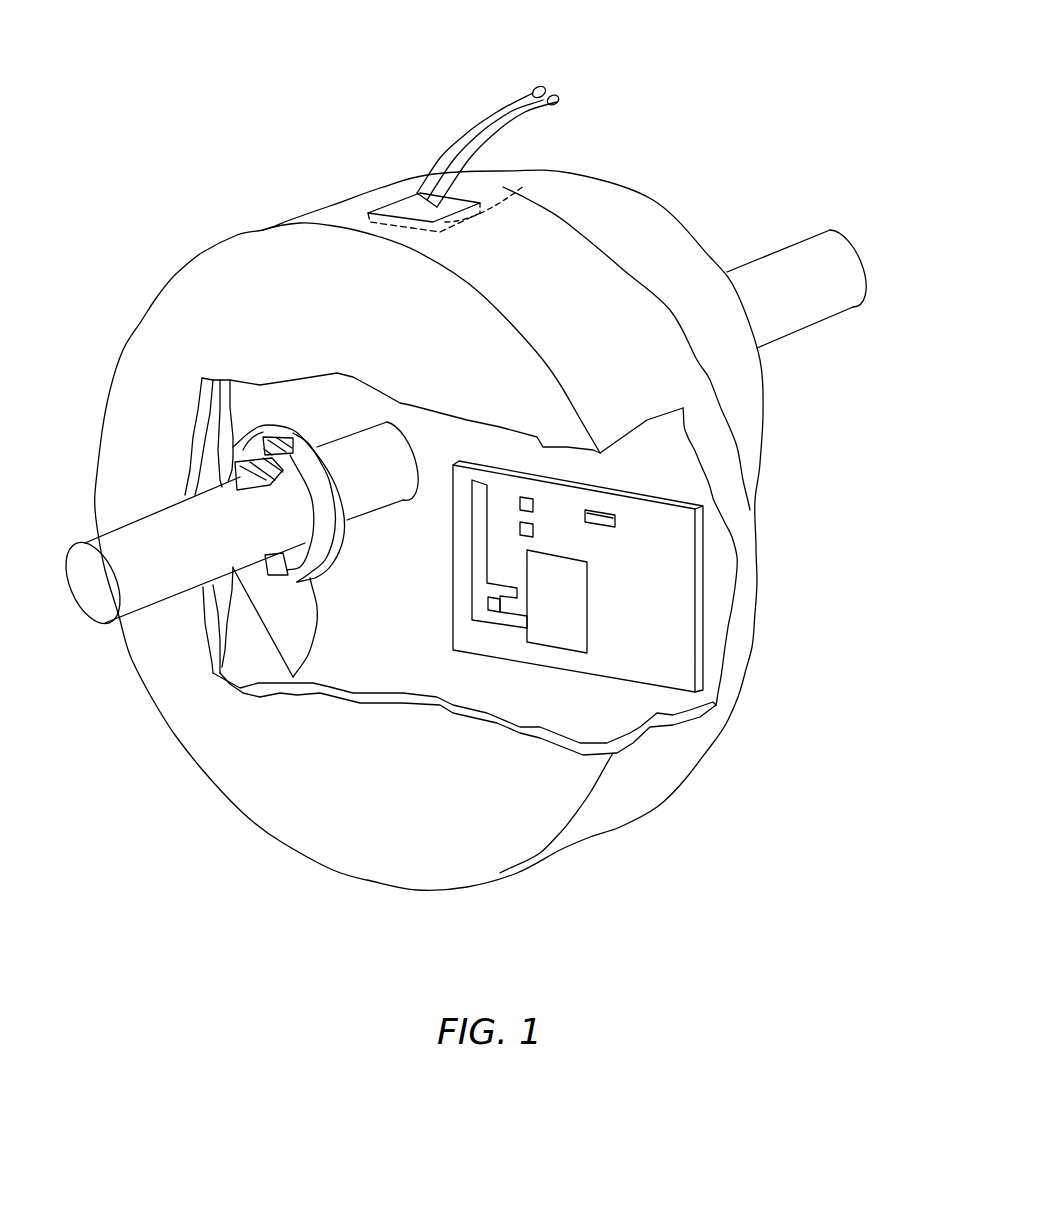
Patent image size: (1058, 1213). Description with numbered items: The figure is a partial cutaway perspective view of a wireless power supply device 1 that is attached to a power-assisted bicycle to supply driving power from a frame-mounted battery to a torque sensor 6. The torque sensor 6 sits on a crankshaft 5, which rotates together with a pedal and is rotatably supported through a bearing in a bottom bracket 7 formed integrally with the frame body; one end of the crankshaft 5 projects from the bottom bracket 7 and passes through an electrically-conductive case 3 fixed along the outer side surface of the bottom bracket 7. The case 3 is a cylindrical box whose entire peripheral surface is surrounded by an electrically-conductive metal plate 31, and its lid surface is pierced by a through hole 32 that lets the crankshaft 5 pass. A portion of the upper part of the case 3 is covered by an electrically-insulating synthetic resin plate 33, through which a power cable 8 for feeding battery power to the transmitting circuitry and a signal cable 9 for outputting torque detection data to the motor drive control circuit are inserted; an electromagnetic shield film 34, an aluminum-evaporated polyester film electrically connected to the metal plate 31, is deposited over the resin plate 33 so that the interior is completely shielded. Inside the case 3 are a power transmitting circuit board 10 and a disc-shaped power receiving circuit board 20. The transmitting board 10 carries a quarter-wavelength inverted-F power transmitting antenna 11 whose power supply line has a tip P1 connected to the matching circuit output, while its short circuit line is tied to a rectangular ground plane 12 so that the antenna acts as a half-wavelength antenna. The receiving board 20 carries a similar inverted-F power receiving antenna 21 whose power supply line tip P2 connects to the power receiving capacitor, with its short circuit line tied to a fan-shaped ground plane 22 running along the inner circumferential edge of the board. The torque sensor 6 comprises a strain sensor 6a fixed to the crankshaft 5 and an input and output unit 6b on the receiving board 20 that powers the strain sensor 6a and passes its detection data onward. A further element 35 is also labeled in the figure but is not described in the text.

The wireless power supply device 1 is at (880, 573).
The electrically-conductive case 3 is at (640, 383).
The crankshaft 5 is at (163, 550).
The torque sensor 6 is at (57, 304).
The strain sensor 6a is at (245, 478).
The input and output unit 6b is at (278, 436).
The bottom bracket 7 is at (667, 237).
The power cable 8 is at (513, 105).
The signal cable 9 is at (557, 95).
The power transmitting circuit board 10 is at (670, 627).
The power transmitting antenna 11 is at (480, 577).
The ground plane 12 is at (573, 587).
The power receiving circuit board 20 is at (255, 426).
The power receiving antenna 21 is at (293, 677).
The ground plane 22 is at (238, 612).
The electrically-conductive metal plate 31 is at (317, 213).
The through hole 32 is at (410, 440).
The electrically-insulating synthetic resin plate 33 is at (515, 185).
The electromagnetic shield film 34 is at (403, 203).
The inner surface 35 is at (317, 400).
The tip of the power supply line P1 is at (496, 615).
The tip of the power supply line P2 is at (288, 577).